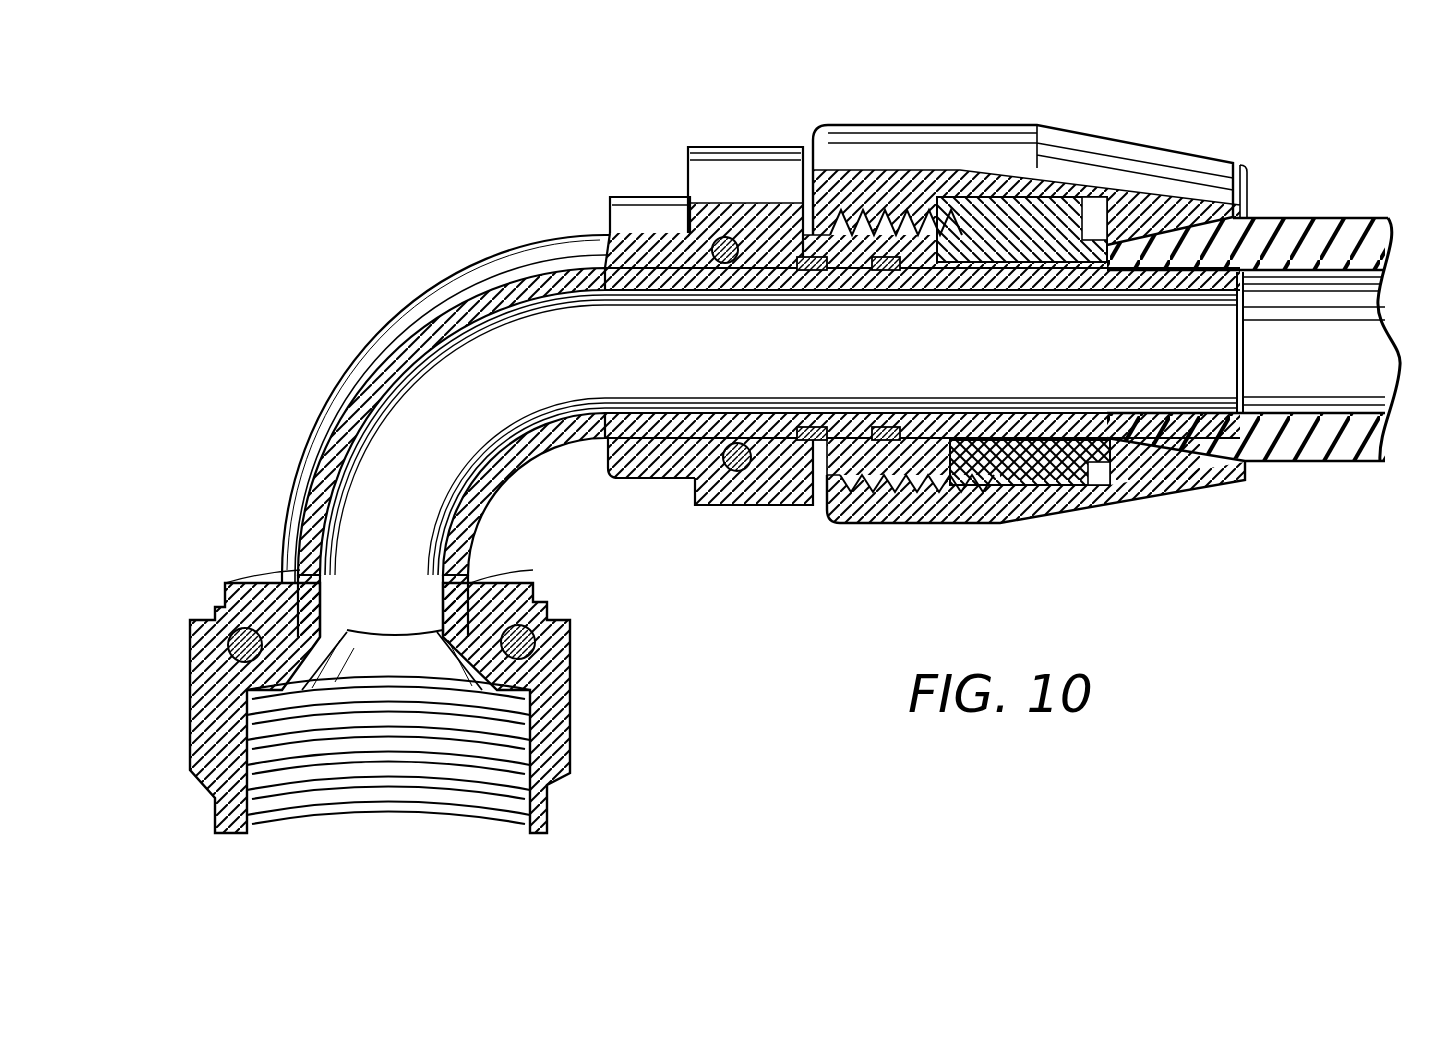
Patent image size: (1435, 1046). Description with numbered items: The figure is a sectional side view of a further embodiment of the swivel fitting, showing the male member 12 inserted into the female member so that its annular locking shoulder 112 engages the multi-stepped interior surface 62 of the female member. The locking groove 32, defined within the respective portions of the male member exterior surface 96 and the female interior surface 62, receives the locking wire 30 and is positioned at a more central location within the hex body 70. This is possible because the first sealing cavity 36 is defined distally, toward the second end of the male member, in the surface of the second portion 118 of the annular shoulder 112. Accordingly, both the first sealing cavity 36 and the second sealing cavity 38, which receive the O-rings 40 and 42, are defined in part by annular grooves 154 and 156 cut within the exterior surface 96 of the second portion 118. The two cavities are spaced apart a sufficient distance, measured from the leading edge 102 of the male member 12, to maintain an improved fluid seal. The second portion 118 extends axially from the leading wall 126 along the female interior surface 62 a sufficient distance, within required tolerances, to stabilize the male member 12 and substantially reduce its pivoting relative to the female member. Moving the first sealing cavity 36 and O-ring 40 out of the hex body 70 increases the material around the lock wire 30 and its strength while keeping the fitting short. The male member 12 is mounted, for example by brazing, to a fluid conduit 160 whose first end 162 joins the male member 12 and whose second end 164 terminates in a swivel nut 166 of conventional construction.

The male member 12 is at (633, 208).
The locking wire 30 is at (732, 265).
The locking groove 32 is at (680, 290).
The first sealing cavity 36 is at (782, 250).
The second sealing cavity 38 is at (898, 228).
The first O-ring 40 is at (822, 297).
The second O-ring 42 is at (888, 292).
The multi-stepped interior surface 62 is at (975, 250).
The hex body 70 is at (707, 147).
The exterior surface 96 is at (740, 263).
The leading edge 102 is at (1245, 280).
The annular locking shoulder 112 is at (868, 293).
The second portion 118 is at (855, 290).
The leading wall 126 is at (770, 255).
The annular groove 154 is at (810, 268).
The annular groove 156 is at (930, 290).
The fluid conduit 160 is at (327, 440).
The first end 162 is at (540, 255).
The second end 164 is at (307, 542).
The swivel nut 166 is at (205, 692).